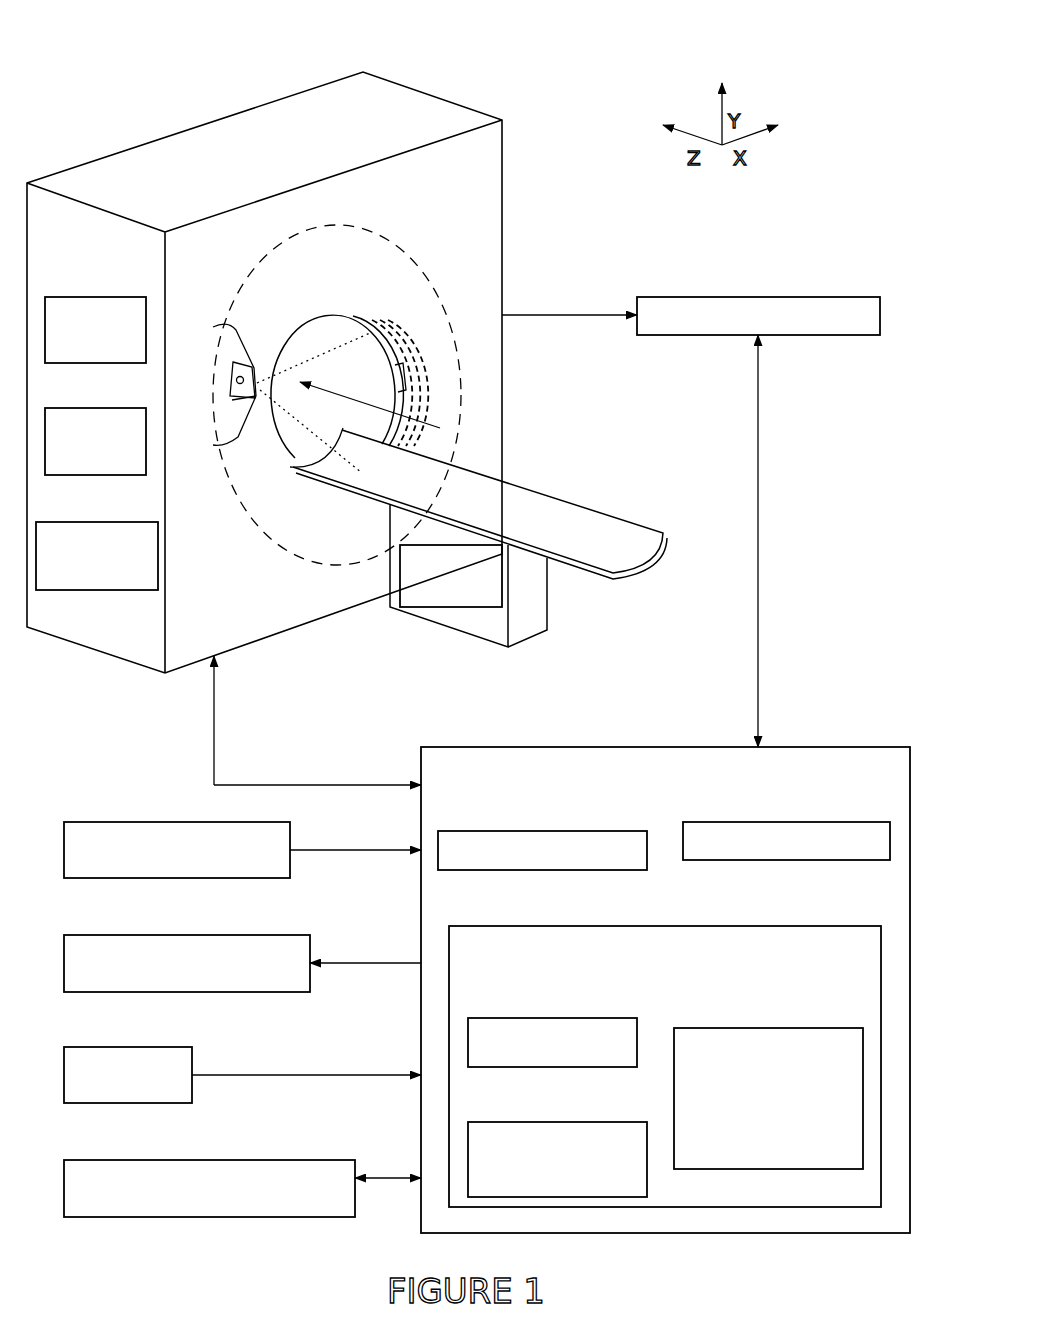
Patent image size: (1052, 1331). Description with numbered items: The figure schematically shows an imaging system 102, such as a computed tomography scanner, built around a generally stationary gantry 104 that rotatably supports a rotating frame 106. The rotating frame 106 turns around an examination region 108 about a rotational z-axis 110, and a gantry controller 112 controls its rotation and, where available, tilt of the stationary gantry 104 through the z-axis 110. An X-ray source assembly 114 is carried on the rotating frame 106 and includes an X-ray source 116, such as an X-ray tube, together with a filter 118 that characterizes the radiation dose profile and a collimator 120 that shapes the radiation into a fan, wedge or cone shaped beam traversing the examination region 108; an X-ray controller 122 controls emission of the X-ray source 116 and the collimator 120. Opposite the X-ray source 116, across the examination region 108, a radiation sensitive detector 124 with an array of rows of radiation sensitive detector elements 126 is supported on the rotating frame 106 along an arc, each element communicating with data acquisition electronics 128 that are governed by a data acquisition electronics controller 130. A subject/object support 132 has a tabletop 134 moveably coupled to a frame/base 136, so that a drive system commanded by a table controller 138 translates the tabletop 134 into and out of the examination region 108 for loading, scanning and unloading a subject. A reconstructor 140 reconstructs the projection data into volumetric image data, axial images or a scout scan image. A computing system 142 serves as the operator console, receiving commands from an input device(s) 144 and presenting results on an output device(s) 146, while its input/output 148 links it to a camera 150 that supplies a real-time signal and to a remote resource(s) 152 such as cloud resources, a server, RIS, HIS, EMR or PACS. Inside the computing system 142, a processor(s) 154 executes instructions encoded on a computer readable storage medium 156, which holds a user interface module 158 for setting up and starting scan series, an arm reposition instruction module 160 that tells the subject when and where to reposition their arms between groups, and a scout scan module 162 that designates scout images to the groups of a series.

The imaging system 102 is at (158, 33).
The stationary gantry 104 is at (445, 98).
The rotating frame 106 is at (368, 225).
The examination region 108 is at (350, 421).
The z-axis 110 is at (462, 418).
The gantry controller 112 is at (65, 522).
The X-ray source assembly 114 is at (240, 357).
The X-ray source 116 is at (233, 365).
The filter 118 is at (247, 400).
The collimator 120 is at (240, 428).
The X-ray controller 122 is at (65, 408).
The radiation sensitive detector 124 is at (385, 327).
The radiation sensitive detector elements 126 is at (407, 377).
The data acquisition electronics 128 is at (392, 327).
The data acquisition electronics controller 130 is at (67, 297).
The subject/object support 132 is at (535, 462).
The tabletop 134 is at (520, 518).
The frame/base 136 is at (547, 628).
The table controller 138 is at (413, 607).
The reconstructor 140 is at (767, 297).
The computing system 142 is at (663, 745).
The input device(s) 144 is at (175, 822).
The output device(s) 146 is at (185, 935).
The input/output 148 is at (805, 822).
The camera 150 is at (128, 1047).
The remote resource(s) 152 is at (208, 1160).
The processor(s) 154 is at (545, 831).
The computer readable storage medium 156 is at (667, 925).
The user interface module 158 is at (555, 1018).
The arm reposition instruction module 160 is at (767, 1028).
The scout scan module 162 is at (555, 1122).